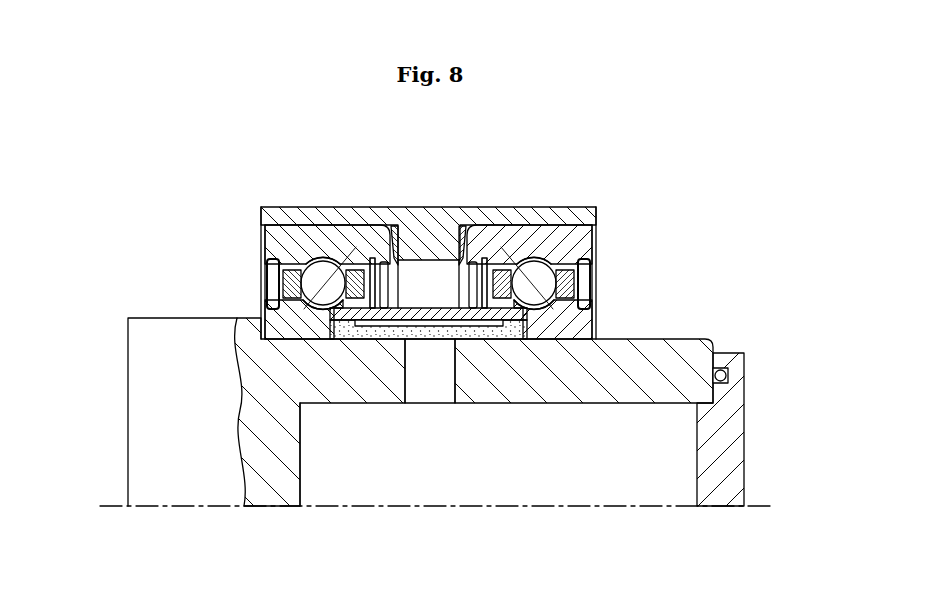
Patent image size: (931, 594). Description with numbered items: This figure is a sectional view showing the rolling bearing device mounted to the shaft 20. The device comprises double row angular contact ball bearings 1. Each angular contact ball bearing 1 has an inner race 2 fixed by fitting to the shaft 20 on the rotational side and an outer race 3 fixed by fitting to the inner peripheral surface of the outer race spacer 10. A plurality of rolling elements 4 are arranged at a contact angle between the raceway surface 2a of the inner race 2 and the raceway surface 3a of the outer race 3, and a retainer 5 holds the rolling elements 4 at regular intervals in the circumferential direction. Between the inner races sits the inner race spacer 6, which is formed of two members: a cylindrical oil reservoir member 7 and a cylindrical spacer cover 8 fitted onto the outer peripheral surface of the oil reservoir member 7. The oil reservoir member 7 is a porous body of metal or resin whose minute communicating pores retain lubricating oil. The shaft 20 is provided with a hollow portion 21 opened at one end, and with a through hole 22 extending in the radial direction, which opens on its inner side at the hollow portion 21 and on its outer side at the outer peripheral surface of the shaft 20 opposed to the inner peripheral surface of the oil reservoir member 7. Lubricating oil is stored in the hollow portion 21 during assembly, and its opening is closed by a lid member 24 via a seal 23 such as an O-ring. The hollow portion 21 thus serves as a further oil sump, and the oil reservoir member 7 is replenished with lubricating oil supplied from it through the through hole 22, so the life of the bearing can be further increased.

The angular contact ball bearing 1 is at (254, 239).
The inner race 2 is at (284, 320).
The raceway surface of the inner race 2a is at (323, 302).
The outer race 3 is at (366, 241).
The raceway surface of the outer race 3a is at (322, 266).
The rolling element 4 is at (318, 276).
The retainer 5 is at (270, 284).
The inner race spacer 6 is at (458, 446).
The oil reservoir member 7 is at (466, 321).
The spacer cover 8 is at (499, 331).
The outer race spacer 10 is at (422, 213).
The shaft 20 is at (128, 424).
The hollow portion 21 is at (343, 488).
The through hole 22 is at (432, 385).
The seal 23 is at (722, 368).
The lid member 24 is at (744, 464).